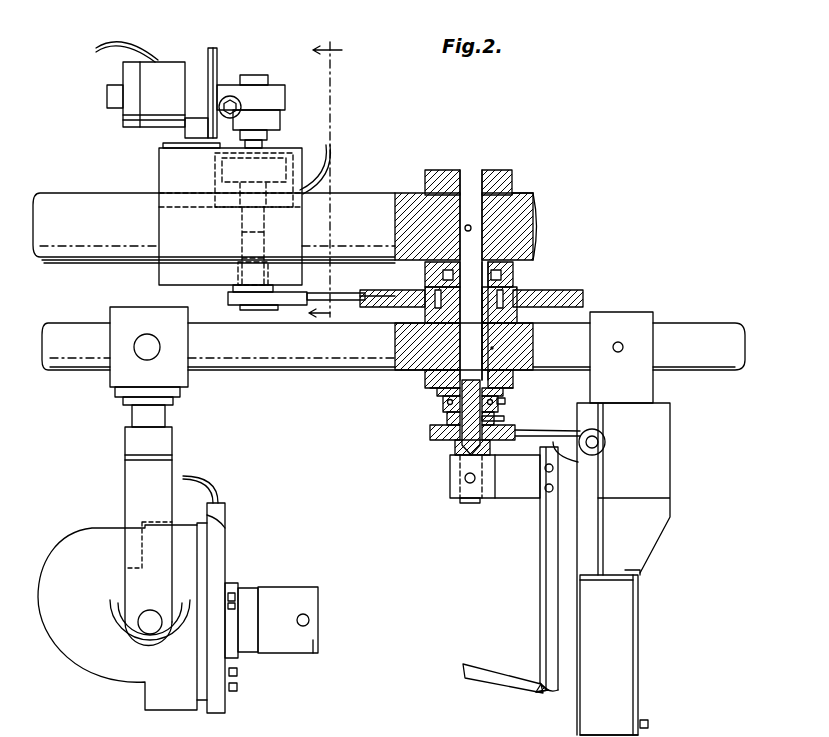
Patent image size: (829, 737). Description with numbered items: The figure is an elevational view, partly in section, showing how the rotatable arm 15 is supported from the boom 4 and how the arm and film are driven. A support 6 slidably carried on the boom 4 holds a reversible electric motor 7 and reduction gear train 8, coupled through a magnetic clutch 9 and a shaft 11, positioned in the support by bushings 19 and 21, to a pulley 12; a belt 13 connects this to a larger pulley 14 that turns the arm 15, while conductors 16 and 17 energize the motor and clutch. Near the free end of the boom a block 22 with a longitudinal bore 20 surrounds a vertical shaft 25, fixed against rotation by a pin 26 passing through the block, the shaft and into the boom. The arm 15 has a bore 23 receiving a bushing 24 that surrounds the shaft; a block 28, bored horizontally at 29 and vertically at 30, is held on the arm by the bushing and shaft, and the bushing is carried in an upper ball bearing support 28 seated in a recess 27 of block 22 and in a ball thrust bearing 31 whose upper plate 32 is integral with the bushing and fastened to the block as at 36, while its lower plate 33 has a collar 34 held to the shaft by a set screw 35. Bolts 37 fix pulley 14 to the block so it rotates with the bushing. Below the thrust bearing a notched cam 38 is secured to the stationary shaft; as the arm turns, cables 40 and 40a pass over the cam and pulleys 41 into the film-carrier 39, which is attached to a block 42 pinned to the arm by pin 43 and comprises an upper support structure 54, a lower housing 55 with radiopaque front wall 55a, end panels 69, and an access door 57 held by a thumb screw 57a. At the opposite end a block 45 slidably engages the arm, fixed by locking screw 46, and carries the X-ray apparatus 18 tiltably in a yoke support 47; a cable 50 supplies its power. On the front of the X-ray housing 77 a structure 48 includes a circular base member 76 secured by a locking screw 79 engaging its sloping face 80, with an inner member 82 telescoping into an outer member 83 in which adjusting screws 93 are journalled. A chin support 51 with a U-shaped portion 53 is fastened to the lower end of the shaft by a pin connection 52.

The boom 4 is at (92, 207).
The support 6 is at (159, 168).
The reversible electric motor 7 is at (165, 62).
The reduction gear train 8 is at (285, 98).
The magnetic clutch 9 is at (215, 170).
The shaft 11 is at (240, 240).
The pulley 12 is at (246, 306).
The belt 13 is at (336, 302).
The pulley 14 is at (372, 323).
The arm 15 is at (272, 371).
The conductor 16 is at (123, 45).
The conductor 17 is at (316, 150).
The X-ray apparatus 18 is at (77, 529).
The bushing 19 is at (240, 214).
The longitudinal bore 20 is at (440, 177).
The bushing 21 is at (238, 266).
The block 22 is at (512, 185).
The bore 23 is at (520, 350).
The bushing 24 is at (487, 330).
The vertical shaft 25 is at (468, 176).
The pin 26 is at (472, 228).
The recess 27 is at (425, 283).
The block 28 is at (513, 270).
The horizontal bore 29 is at (435, 330).
The vertical bore 30 is at (440, 392).
The ball thrust bearing 31 is at (514, 409).
The upper plate 32 is at (445, 400).
The lower plate 33 is at (457, 425).
The collar 34 is at (455, 458).
The set screw 35 is at (500, 418).
The securing point 36 is at (448, 415).
The bolts 37 is at (525, 290).
The cam 38 is at (518, 470).
The film-carrier 39 is at (657, 614).
The cable 40 is at (628, 500).
The cable 40a is at (598, 447).
The pulleys 41 is at (605, 442).
The block 42 is at (625, 318).
The pin 43 is at (623, 347).
The block 45 is at (118, 372).
The locking screw 46 is at (135, 340).
The yoke support 47 is at (125, 478).
The structure 48 is at (320, 584).
The cable 50 is at (222, 490).
The chin support 51 is at (528, 605).
The pin connection 52 is at (465, 480).
The U-shaped portion 53 is at (498, 662).
The upper support structure 54 is at (655, 480).
The lower housing 55 is at (622, 707).
The front wall 55a is at (578, 716).
The access door 57 is at (640, 640).
The thumb screw 57a is at (650, 725).
The end panels 69 is at (622, 676).
The circular base member 76 is at (248, 588).
The X-ray housing 77 is at (216, 540).
The locking screw 79 is at (236, 692).
The sloping face 80 is at (235, 583).
The inner member 82 is at (240, 650).
The outer member 83 is at (314, 654).
The adjusting screw 93 is at (310, 620).